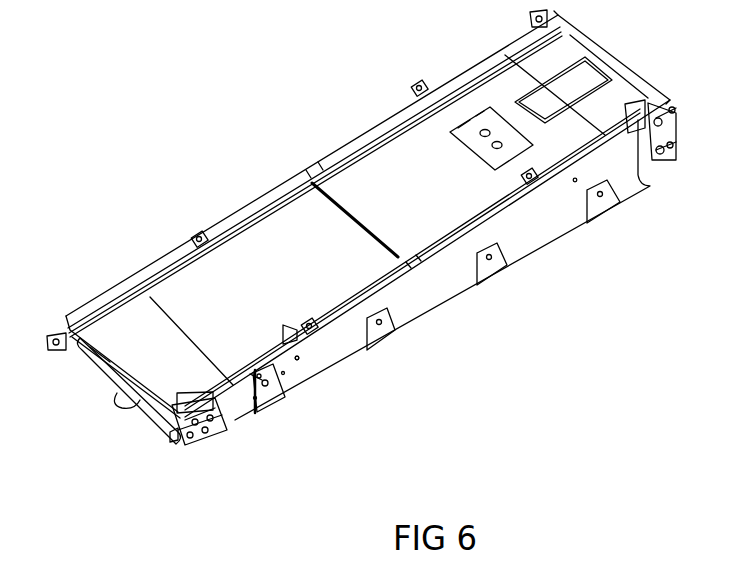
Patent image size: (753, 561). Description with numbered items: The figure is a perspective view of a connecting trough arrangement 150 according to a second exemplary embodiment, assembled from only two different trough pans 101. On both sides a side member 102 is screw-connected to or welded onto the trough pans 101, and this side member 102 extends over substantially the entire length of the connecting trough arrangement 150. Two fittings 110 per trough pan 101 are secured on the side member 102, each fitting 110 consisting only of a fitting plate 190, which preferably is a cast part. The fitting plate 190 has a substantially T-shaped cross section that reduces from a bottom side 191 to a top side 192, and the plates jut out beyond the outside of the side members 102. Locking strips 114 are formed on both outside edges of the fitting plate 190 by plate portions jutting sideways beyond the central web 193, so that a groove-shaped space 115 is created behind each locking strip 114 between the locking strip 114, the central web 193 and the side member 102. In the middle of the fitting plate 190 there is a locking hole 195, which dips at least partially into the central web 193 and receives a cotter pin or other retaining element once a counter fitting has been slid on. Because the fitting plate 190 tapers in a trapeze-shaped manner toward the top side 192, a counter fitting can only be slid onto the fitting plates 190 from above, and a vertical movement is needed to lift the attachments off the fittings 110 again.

The connecting trough arrangement 150 is at (259, 124).
The trough pan 101 is at (363, 108).
The side member 102 is at (543, 230).
The fitting 110 is at (627, 223).
The locking strip 114 is at (283, 374).
The groove-shaped space 115 is at (286, 375).
The fitting plate 190 is at (267, 393).
The bottom side 191 is at (270, 398).
The top side 192 is at (258, 375).
The central web 193 is at (257, 380).
The locking hole 195 is at (230, 370).